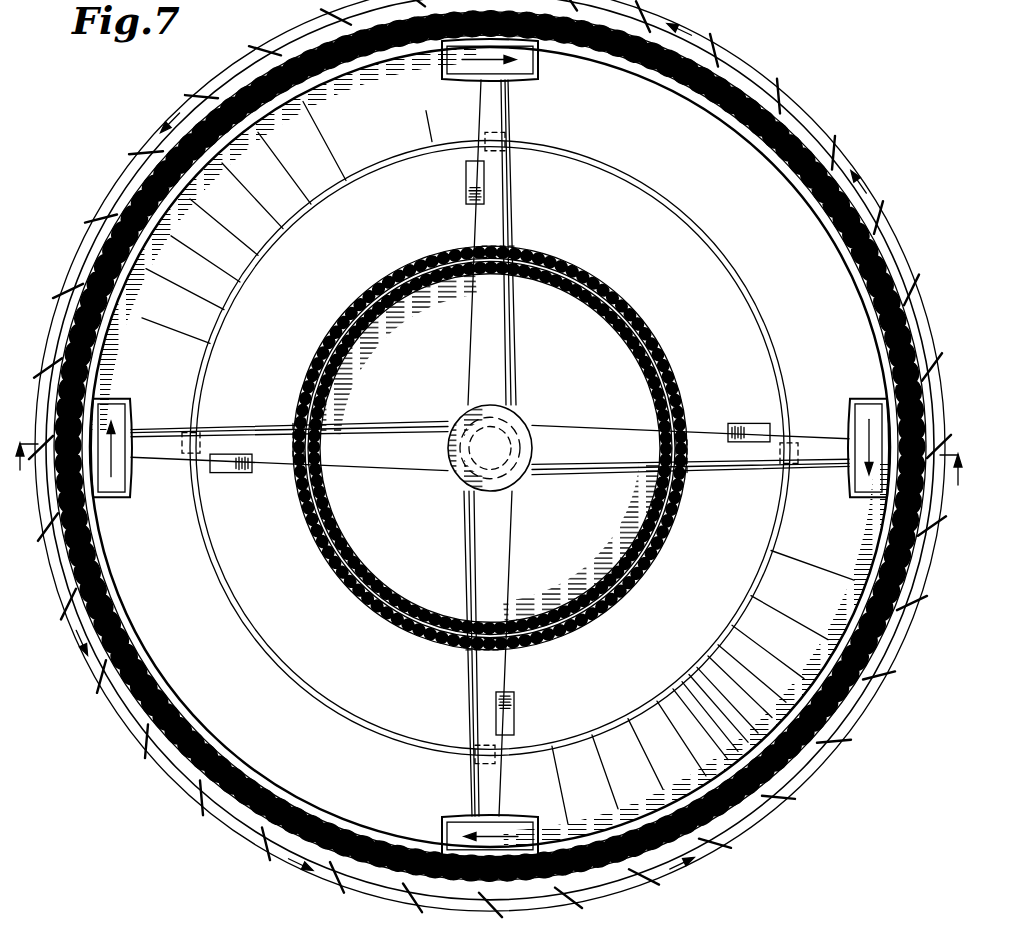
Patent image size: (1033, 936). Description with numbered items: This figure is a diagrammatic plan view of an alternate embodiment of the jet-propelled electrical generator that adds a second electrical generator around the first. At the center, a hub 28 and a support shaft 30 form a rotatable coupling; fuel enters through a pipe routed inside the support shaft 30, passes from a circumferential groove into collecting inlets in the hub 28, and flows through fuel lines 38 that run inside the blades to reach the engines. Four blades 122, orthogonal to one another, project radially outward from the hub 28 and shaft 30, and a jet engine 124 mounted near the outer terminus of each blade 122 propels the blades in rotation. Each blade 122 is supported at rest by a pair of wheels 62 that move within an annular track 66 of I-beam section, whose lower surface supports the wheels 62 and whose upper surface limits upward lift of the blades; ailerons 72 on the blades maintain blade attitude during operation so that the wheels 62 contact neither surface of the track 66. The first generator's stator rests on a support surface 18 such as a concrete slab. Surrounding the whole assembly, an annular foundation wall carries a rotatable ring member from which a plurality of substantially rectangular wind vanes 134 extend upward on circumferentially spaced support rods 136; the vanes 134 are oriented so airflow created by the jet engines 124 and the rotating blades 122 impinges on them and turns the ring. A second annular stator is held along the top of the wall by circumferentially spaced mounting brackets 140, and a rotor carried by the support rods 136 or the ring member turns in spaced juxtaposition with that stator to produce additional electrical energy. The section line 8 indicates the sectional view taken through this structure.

The section line 8- 8 is at (487, 475).
The support surface 18 is at (560, 559).
The hub 28 is at (531, 418).
The support shaft 30 is at (522, 470).
The fuel lines 38 is at (190, 172).
The wheels 62 is at (200, 440).
The annular track 66 is at (364, 727).
The ailerons 72 is at (462, 200).
The blades 122 is at (513, 337).
The jet engine 124 is at (527, 82).
The wind vanes 134 is at (103, 695).
The support rods 136 is at (542, 933).
The mounting brackets 140 is at (246, 76).